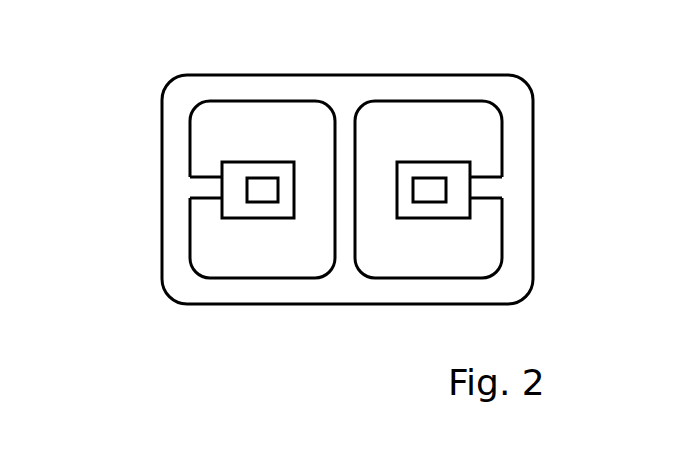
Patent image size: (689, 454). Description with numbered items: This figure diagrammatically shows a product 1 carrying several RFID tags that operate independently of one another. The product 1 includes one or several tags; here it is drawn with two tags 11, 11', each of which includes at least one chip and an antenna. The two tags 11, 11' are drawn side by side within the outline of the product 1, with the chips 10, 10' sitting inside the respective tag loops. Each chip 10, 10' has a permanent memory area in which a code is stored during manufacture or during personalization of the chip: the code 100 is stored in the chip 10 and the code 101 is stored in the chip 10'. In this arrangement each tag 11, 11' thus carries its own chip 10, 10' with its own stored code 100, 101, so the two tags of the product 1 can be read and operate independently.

The product 1 is at (110, 326).
The chip 10 is at (433, 114).
The chip 10' is at (258, 114).
The code 100 is at (428, 190).
The code 101 is at (263, 188).
The tag 11 is at (458, 141).
The tag 11' is at (295, 142).